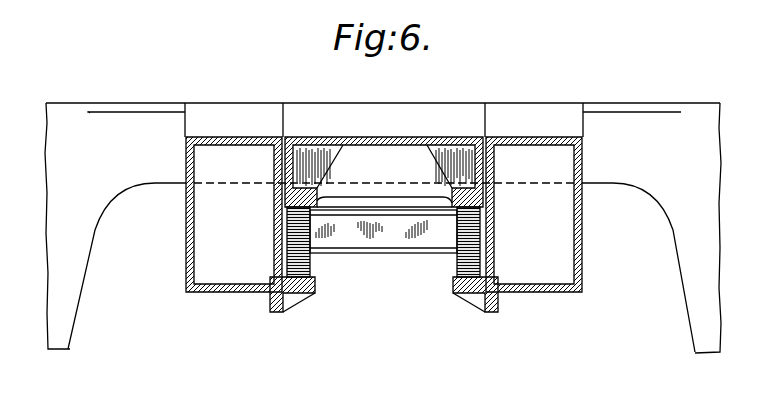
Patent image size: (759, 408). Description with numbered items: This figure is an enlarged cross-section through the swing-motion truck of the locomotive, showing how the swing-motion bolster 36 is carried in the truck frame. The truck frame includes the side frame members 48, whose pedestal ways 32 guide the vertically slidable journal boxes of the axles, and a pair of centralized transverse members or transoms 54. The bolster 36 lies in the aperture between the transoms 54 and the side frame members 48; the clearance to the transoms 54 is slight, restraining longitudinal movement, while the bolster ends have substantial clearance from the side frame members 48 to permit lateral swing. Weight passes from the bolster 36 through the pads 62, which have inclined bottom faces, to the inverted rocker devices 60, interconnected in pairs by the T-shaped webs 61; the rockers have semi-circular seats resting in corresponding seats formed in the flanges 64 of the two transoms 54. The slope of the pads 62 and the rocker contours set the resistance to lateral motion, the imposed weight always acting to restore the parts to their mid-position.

The pedestal ways 32 is at (67, 296).
The swing-motion bolster 36 is at (445, 137).
The side frame members 48 is at (383, 228).
The transoms 54 is at (236, 138).
The inverted rocker devices 60 is at (311, 265).
The T-shaped webs 61 is at (382, 247).
The pads 62 is at (440, 207).
The flanges 64 is at (300, 279).